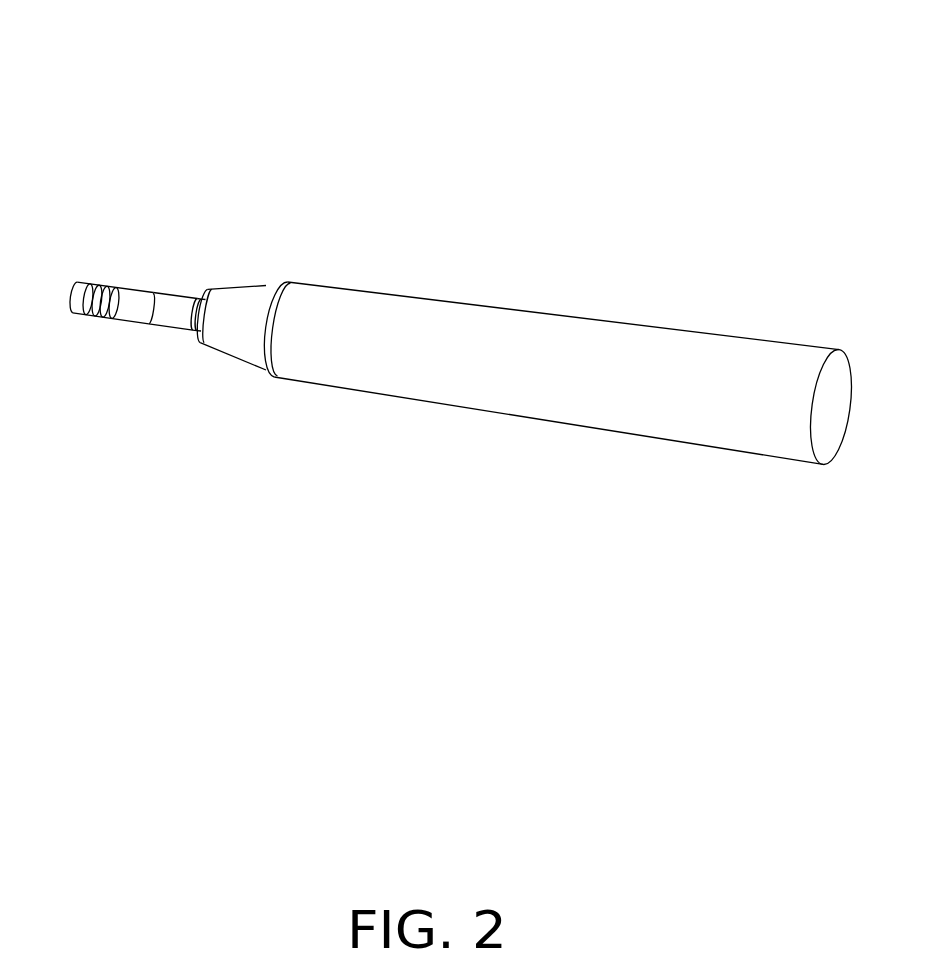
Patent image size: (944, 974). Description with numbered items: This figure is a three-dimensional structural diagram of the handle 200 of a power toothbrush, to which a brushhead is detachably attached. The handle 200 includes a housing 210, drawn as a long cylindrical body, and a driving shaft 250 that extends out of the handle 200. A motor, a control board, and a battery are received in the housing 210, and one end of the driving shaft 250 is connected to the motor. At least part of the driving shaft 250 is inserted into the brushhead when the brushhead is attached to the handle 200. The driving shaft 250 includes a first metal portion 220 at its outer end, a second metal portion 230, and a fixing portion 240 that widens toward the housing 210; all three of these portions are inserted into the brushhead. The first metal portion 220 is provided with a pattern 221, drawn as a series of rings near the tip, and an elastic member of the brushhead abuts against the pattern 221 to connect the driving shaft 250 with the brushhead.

The handle 200 is at (580, 62).
The housing 210 is at (603, 335).
The first metal portion 220 is at (131, 300).
The pattern 221 is at (90, 312).
The second metal portion 230 is at (172, 313).
The fixing portion 240 is at (228, 308).
The driving shaft 250 is at (276, 192).